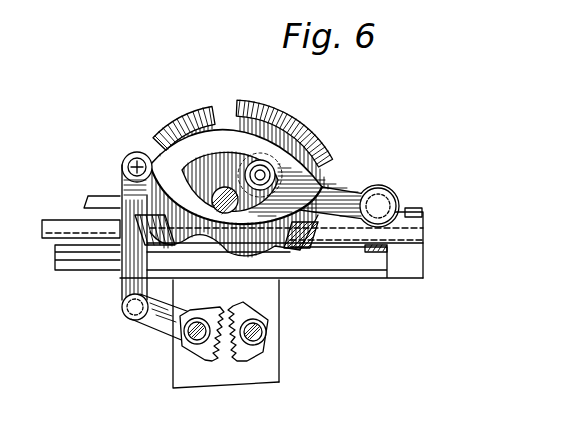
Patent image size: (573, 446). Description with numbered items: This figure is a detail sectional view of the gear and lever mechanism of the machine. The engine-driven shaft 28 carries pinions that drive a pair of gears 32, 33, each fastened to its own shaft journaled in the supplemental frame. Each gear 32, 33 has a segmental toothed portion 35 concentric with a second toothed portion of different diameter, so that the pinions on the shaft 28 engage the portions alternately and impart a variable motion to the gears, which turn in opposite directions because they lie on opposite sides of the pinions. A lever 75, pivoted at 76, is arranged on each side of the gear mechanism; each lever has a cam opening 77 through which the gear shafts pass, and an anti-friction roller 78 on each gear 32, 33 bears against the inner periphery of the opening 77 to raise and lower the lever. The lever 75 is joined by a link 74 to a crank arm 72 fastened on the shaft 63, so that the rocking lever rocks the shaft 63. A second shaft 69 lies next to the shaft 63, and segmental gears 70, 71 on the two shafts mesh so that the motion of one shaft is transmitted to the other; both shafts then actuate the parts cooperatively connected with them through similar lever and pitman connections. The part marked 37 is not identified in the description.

The shaft 28 is at (89, 198).
The gear 32 is at (176, 128).
The gear 33 is at (313, 175).
The segmental toothed portion 35 is at (277, 128).
The pivot pin 37 is at (229, 214).
The shaft 63 is at (187, 338).
The shaft 69 is at (266, 331).
The segmental gear 70 is at (244, 358).
The segmental gear 71 is at (206, 362).
The crank arm 72 is at (162, 326).
The link 74 is at (128, 281).
The lever 75 is at (329, 188).
The pivot 76 is at (386, 195).
The cam opening 77 is at (228, 137).
The anti-friction roller 78 is at (309, 156).